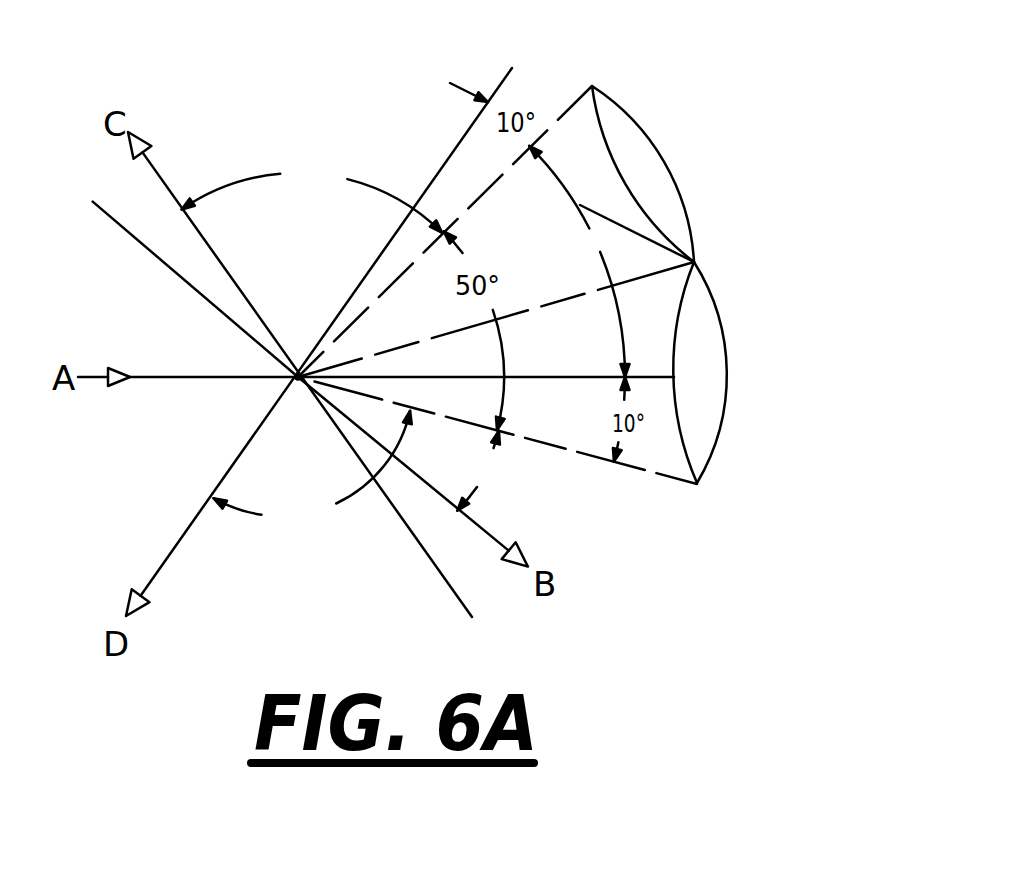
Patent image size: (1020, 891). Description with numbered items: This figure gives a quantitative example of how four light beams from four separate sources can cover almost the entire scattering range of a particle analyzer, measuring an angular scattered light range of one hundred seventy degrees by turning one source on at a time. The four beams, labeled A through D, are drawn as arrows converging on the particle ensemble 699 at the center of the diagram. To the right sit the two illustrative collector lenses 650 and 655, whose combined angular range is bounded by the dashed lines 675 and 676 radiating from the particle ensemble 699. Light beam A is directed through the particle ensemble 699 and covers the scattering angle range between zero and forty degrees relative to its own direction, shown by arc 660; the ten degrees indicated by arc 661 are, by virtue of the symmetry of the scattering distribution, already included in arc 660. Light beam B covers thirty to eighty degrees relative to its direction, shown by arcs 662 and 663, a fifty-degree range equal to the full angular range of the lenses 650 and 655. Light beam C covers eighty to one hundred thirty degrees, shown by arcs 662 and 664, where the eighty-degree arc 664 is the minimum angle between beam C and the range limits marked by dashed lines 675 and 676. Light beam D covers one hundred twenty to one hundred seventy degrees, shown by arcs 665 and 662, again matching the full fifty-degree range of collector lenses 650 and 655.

The collector lens 650 is at (717, 443).
The collector lens 655 is at (644, 130).
The arc 660 is at (662, 164).
The arc 661 is at (628, 406).
The arc 662 is at (563, 261).
The arc 663 is at (477, 488).
The arc 664 is at (220, 194).
The arc 665 is at (243, 512).
The dashed line 675 is at (570, 97).
The dashed line 676 is at (662, 480).
The particle ensemble 699 is at (297, 383).